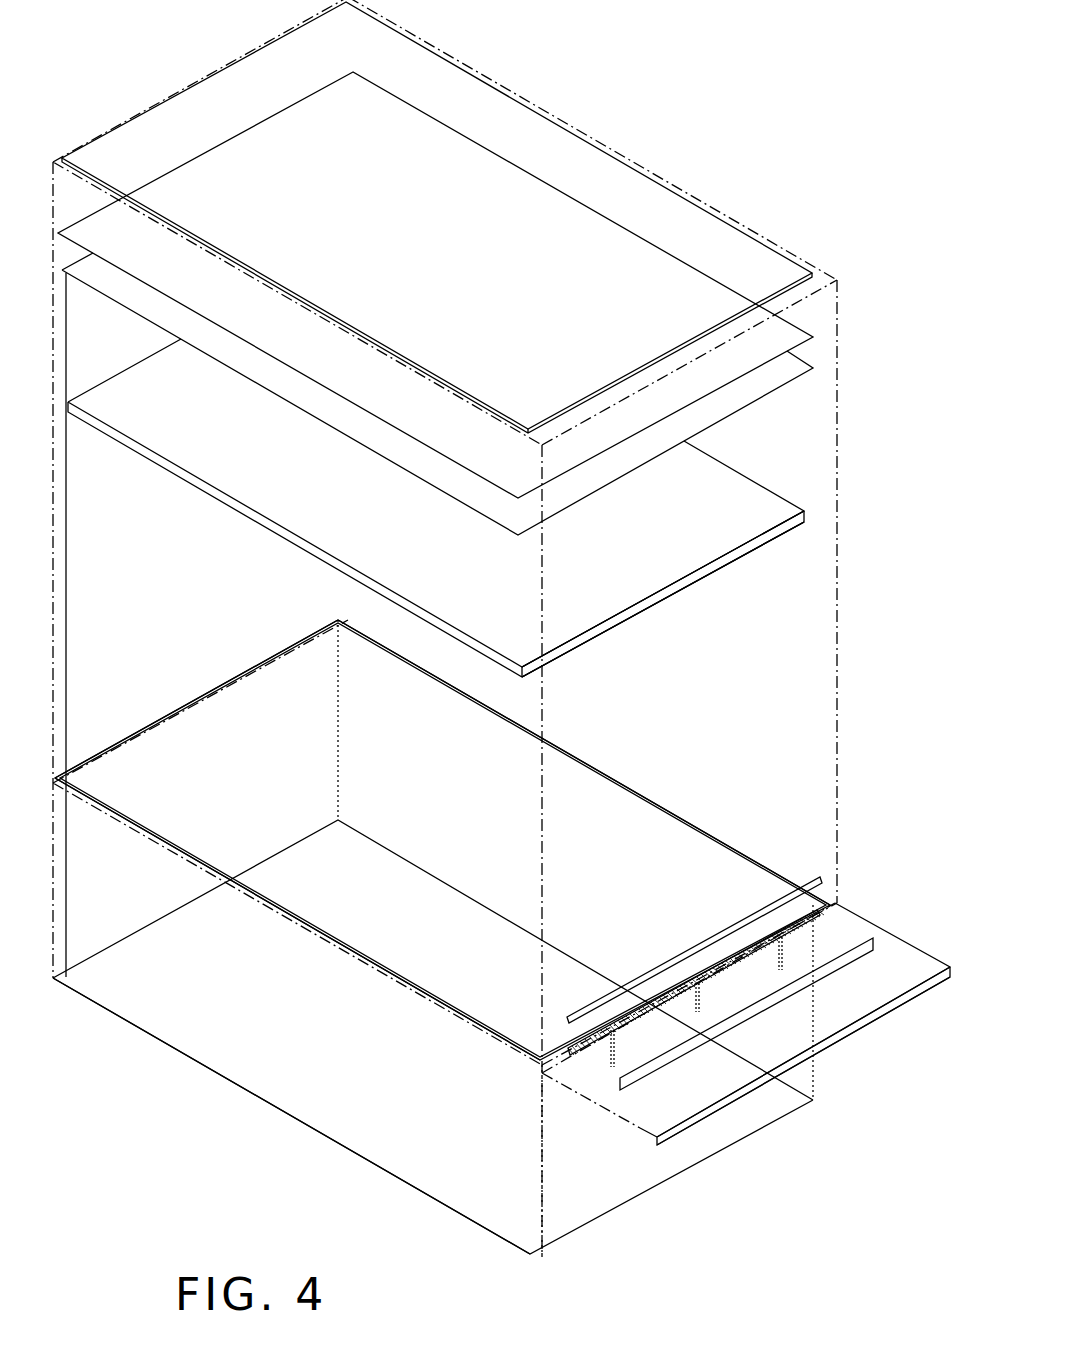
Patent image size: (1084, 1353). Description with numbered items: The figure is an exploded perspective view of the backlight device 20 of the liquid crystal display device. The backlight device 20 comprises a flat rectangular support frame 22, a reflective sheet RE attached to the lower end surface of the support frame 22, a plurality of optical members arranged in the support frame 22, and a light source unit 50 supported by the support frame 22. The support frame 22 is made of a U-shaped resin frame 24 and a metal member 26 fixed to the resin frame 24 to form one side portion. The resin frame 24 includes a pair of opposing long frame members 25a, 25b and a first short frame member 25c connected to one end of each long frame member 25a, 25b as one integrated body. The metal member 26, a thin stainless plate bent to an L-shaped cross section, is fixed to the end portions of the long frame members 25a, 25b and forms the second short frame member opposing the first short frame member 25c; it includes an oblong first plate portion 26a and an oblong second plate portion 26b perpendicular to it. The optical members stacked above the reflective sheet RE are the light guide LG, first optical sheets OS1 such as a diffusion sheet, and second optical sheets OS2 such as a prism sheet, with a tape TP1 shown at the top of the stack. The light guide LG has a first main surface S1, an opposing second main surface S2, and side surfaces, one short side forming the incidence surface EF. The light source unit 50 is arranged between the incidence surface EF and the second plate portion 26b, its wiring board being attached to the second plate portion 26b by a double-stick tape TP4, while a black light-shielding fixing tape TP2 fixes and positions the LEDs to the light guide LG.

The backlight device 20 is at (716, 187).
The first tape / top plate TP1 is at (621, 158).
The first optical sheet OS1 is at (215, 343).
The second optical sheet OS2 is at (280, 343).
The light guide LG is at (240, 488).
The first main surface S1 is at (718, 492).
The second main surface S2 is at (708, 573).
The incidence surface EF is at (640, 607).
The support frame 22 is at (620, 768).
The resin frame 24 is at (231, 677).
The long frame member 25a is at (692, 820).
The long frame member 25b is at (298, 920).
The first short frame member 25c is at (167, 714).
The reflective sheet RE is at (235, 1078).
The fixing tape TP2 is at (705, 940).
The double-stick tape TP4 is at (862, 940).
The metal member 26 is at (855, 1024).
The first plate portion 26a is at (715, 1083).
The second plate portion 26b is at (722, 1098).
The light source unit 50 is at (592, 1060).